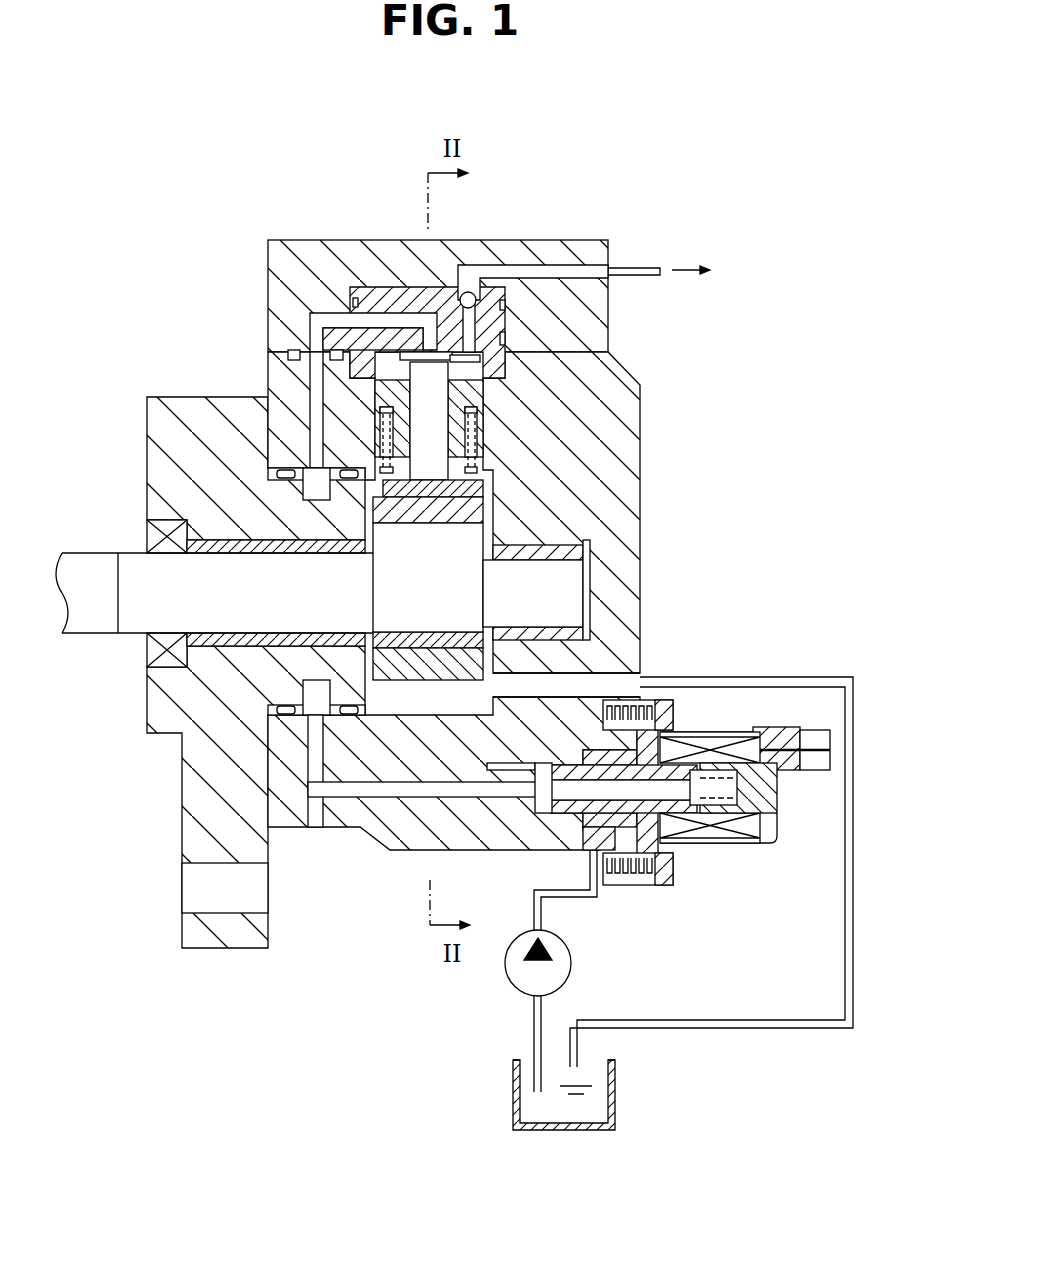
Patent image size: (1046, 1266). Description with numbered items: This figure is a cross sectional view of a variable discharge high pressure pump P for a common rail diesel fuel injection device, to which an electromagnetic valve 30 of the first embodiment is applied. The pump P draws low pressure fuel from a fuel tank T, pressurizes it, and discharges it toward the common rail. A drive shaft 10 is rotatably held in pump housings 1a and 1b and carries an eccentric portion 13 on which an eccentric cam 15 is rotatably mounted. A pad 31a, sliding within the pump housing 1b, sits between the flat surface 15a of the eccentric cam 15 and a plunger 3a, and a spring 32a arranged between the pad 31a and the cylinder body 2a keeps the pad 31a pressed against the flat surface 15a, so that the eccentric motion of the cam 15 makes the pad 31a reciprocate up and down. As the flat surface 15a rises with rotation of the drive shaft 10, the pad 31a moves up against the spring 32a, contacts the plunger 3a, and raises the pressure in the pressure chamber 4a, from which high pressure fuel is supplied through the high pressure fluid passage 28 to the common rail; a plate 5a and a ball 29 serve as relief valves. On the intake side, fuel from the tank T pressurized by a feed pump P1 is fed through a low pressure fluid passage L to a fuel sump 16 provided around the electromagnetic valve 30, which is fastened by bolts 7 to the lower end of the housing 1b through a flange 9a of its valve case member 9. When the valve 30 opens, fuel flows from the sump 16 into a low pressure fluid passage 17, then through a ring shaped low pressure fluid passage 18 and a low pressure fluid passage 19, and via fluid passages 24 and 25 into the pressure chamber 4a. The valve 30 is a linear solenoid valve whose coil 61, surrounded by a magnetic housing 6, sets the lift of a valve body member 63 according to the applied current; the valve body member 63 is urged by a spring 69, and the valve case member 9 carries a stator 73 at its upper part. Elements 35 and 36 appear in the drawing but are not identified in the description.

The pump housing 1a is at (147, 478).
The pump housing 1b is at (635, 417).
The cylinder body 2a is at (357, 367).
The plunger 3a is at (440, 398).
The pressure chamber 4a is at (483, 363).
The plate 5a is at (483, 323).
The housing 6 is at (740, 845).
The bolts 7 is at (673, 715).
The valve case member 9 is at (573, 757).
The flange 9a is at (648, 690).
The drive shaft 10 is at (92, 628).
The eccentric portion 13 is at (483, 603).
The eccentric cam 15 is at (478, 502).
The flat surface 15a is at (493, 475).
The fuel sump 16 is at (600, 823).
The low pressure fluid passage 17 is at (385, 793).
The ring shaped low pressure fluid passage 18 is at (303, 482).
The low pressure fluid passage 19 is at (306, 383).
The fluid passage 24 is at (318, 313).
The fluid passage 25 is at (383, 317).
The high pressure fluid passage 28 is at (578, 266).
The ball 29 is at (472, 294).
The electromagnetic valve 30 is at (651, 805).
The pad 31a is at (487, 454).
The spring 32a is at (470, 441).
The end cap 35 is at (540, 814).
The valve body 36 is at (602, 840).
The coil 61 is at (735, 735).
The valve body member 63 is at (548, 766).
The spring 69 is at (705, 846).
The stator 73 is at (779, 794).
The low pressure fluid passage L is at (542, 920).
The variable discharge high pressure pump P is at (134, 385).
The feed pump P1 is at (562, 975).
The fuel tank T is at (612, 1091).